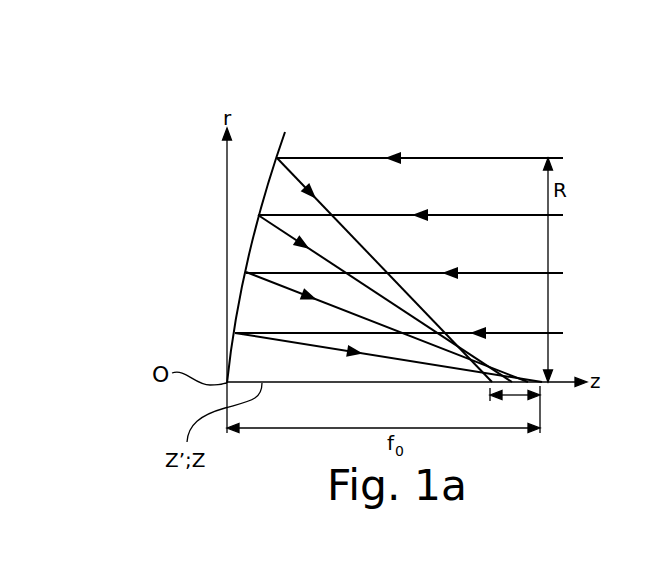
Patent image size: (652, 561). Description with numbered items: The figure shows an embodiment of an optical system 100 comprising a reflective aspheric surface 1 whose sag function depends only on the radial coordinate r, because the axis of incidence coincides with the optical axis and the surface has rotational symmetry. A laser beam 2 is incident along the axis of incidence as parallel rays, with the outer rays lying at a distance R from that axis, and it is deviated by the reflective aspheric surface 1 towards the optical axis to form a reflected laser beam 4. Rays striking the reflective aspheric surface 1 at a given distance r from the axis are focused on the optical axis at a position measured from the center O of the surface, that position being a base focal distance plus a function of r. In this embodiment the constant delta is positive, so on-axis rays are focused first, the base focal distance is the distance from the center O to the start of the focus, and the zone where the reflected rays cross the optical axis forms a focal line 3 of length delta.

The optical system 100 is at (240, 214).
The reflective aspheric surface 1 is at (250, 242).
The laser beam 2 is at (496, 157).
The focal line 3 is at (538, 383).
The reflected laser beam 4 is at (288, 177).